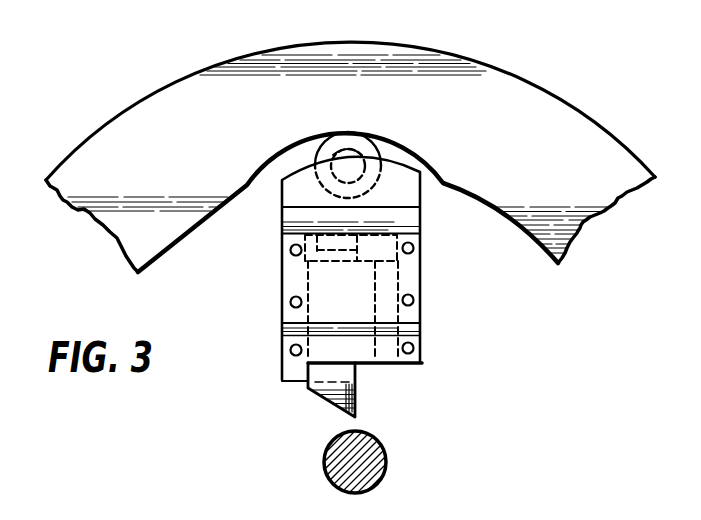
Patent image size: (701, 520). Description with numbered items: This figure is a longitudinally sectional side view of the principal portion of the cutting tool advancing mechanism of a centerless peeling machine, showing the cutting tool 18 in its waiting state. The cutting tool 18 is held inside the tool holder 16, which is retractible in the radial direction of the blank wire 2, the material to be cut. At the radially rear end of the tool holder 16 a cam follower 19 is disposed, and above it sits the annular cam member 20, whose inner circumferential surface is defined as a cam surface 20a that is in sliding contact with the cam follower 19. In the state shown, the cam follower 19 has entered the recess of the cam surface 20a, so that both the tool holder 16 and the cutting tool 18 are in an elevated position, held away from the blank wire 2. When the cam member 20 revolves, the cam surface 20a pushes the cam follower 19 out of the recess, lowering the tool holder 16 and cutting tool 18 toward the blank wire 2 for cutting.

The blank wire 2 is at (385, 448).
The tool holder 16 is at (421, 234).
The cutting tool 18 is at (332, 402).
The cam follower 19 is at (355, 138).
The cam member 20 is at (232, 73).
The cam surface 20a is at (247, 185).